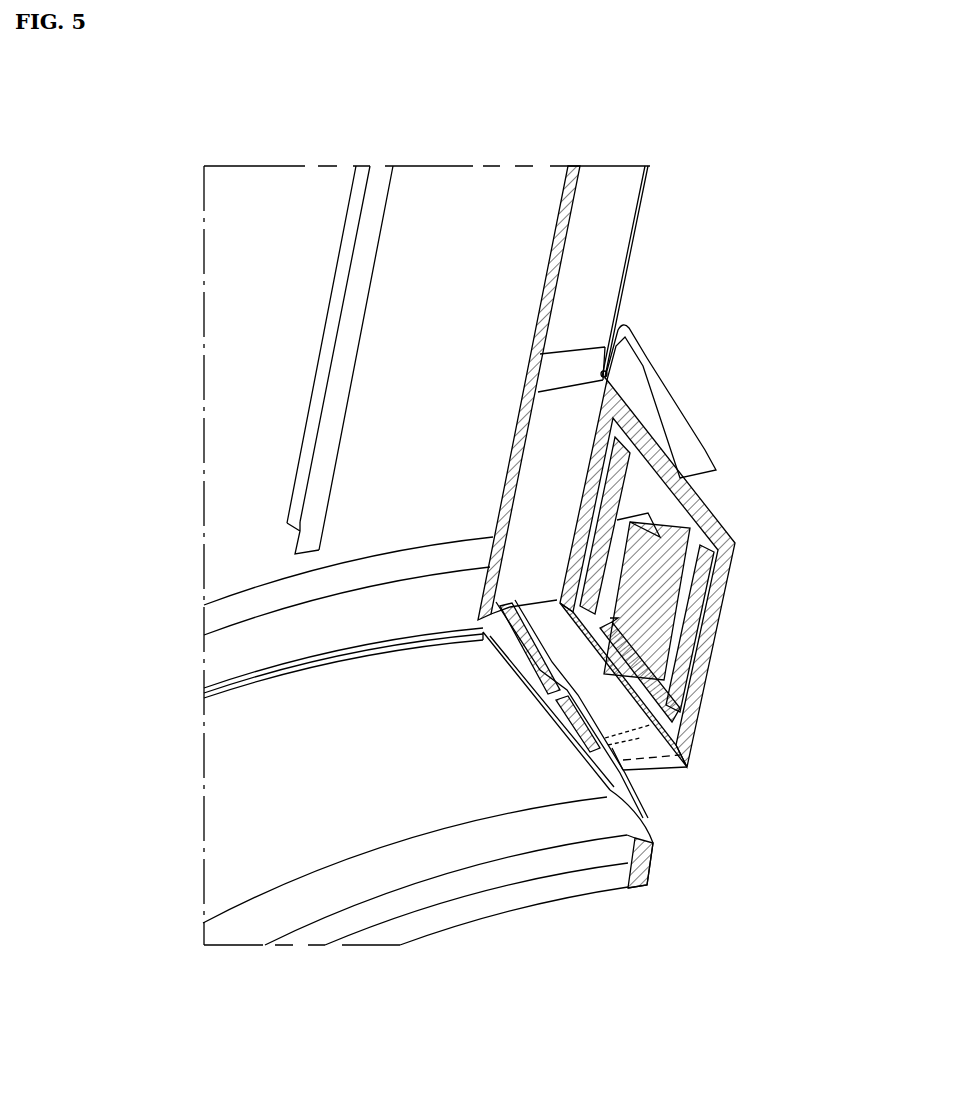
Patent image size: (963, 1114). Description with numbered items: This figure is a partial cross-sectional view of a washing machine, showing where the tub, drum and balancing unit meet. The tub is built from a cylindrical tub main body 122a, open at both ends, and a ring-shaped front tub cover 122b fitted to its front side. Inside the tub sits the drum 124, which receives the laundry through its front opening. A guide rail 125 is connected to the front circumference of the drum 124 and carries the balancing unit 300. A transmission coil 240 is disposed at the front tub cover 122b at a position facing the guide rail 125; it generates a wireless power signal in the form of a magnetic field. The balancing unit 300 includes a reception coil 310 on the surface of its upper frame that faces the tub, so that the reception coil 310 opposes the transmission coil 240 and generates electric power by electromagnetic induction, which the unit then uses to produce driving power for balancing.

The tub main body 122a is at (245, 379).
The front tub cover 122b is at (617, 828).
The drum 124 is at (608, 253).
The guide rail 125 is at (717, 523).
The transmission coil 240 is at (245, 728).
The balancing unit 300 is at (648, 605).
The reception coil 310 is at (657, 697).